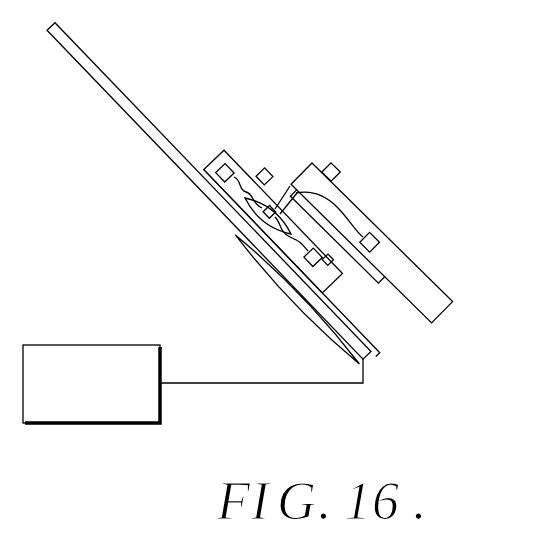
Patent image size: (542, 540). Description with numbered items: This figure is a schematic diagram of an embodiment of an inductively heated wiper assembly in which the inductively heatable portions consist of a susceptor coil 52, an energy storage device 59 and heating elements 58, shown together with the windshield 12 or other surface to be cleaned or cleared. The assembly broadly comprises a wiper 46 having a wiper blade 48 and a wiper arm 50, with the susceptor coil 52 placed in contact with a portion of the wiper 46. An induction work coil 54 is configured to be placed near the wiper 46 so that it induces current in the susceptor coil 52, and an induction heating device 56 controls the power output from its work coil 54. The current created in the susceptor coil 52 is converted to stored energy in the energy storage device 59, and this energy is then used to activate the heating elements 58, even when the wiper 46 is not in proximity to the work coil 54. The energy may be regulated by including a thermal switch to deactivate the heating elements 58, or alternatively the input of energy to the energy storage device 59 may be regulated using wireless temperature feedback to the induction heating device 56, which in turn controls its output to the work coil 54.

The windshield 12 is at (100, 72).
The wiper 46 is at (330, 95).
The wiper blade 48 is at (244, 156).
The wiper arm 50 is at (437, 273).
The susceptor coil 52 is at (253, 212).
The induction work coil 54 is at (274, 270).
The induction heating device 56 is at (78, 344).
The heating elements 58 is at (222, 162).
The energy storage device 59 is at (274, 205).